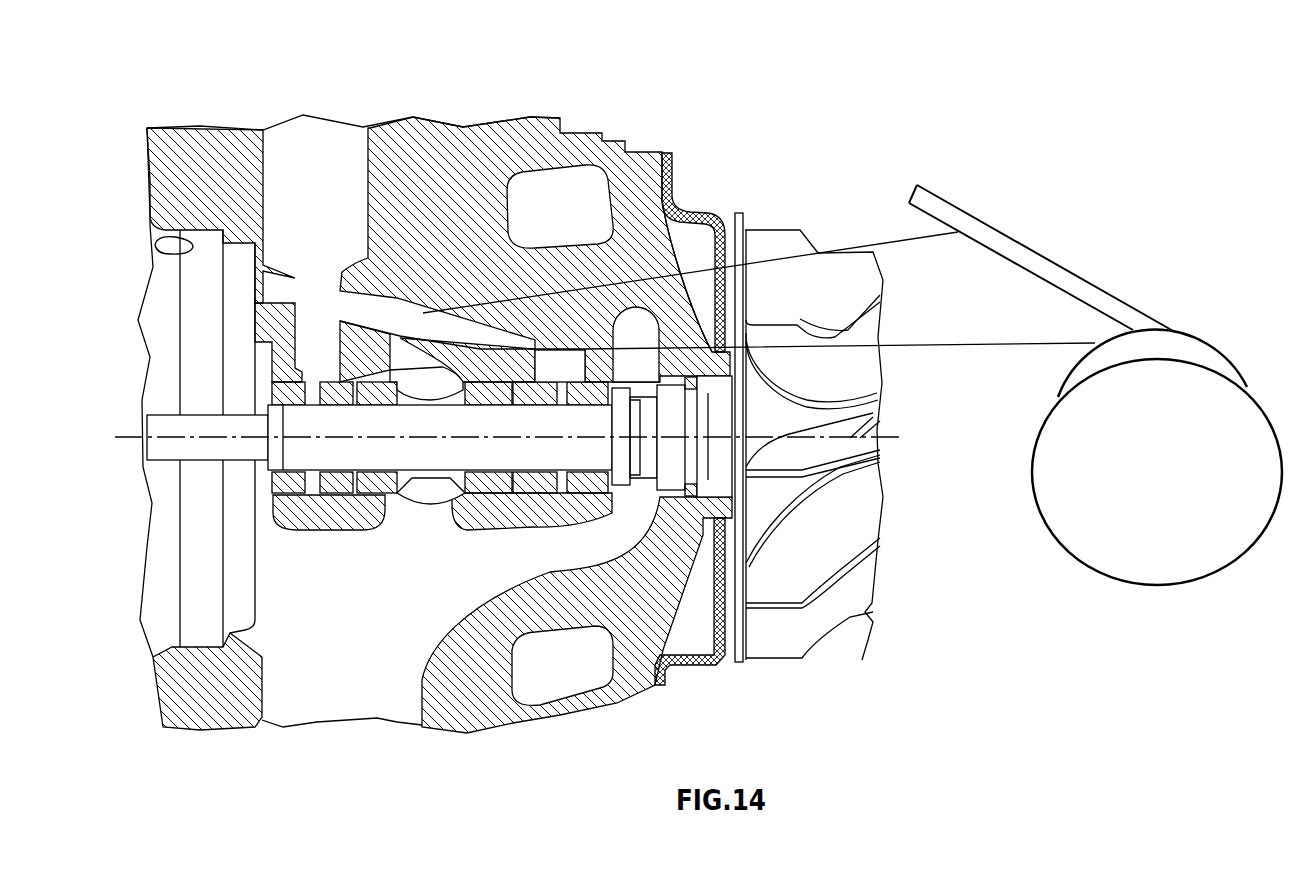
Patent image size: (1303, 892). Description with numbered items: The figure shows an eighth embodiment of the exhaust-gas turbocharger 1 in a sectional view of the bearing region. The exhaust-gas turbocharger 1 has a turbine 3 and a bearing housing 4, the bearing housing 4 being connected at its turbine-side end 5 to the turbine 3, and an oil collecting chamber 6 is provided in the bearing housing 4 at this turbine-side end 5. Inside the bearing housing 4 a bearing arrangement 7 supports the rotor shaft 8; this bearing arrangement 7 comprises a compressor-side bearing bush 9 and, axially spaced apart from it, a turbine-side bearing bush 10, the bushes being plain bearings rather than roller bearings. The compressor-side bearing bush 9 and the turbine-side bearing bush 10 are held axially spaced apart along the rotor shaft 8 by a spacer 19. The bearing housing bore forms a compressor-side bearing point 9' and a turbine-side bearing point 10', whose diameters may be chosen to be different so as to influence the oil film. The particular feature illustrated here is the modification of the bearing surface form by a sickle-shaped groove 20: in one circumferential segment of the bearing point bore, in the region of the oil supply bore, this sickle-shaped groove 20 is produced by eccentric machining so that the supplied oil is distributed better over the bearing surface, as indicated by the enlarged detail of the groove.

The exhaust-gas turbocharger 1 is at (489, 115).
The turbine 3 is at (821, 230).
The bearing housing 4 is at (658, 153).
The turbine-side end 5 is at (729, 207).
The oil collecting chamber 6 is at (683, 345).
The bearing arrangement 7 is at (545, 507).
The rotor shaft 8 is at (290, 447).
The compressor-side bearing bush 9 is at (214, 492).
The compressor-side bearing point 9' is at (240, 221).
The turbine-side bearing bush 10 is at (442, 626).
The turbine-side bearing point 10' is at (639, 234).
The spacer 19 is at (382, 375).
The sickle-shaped groove 20 is at (563, 345).